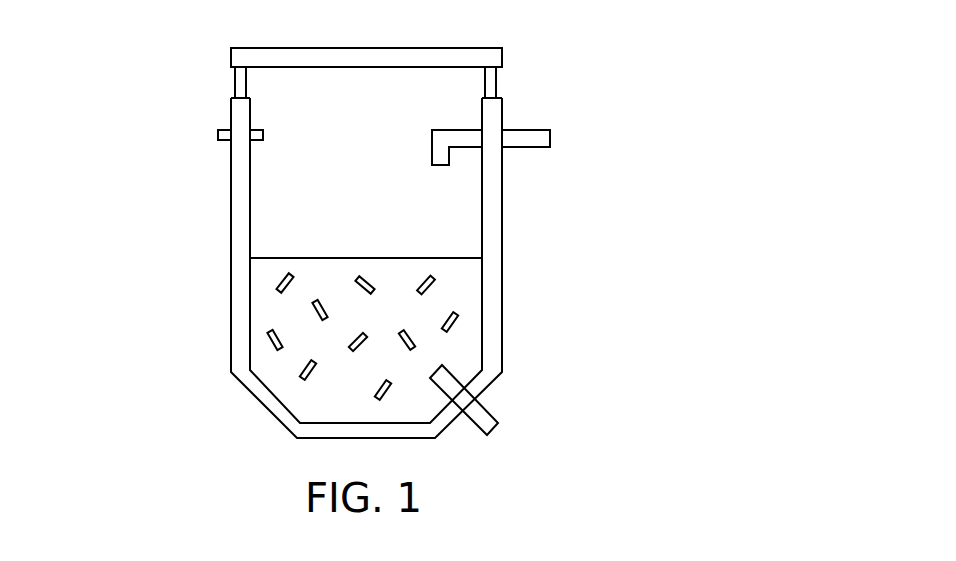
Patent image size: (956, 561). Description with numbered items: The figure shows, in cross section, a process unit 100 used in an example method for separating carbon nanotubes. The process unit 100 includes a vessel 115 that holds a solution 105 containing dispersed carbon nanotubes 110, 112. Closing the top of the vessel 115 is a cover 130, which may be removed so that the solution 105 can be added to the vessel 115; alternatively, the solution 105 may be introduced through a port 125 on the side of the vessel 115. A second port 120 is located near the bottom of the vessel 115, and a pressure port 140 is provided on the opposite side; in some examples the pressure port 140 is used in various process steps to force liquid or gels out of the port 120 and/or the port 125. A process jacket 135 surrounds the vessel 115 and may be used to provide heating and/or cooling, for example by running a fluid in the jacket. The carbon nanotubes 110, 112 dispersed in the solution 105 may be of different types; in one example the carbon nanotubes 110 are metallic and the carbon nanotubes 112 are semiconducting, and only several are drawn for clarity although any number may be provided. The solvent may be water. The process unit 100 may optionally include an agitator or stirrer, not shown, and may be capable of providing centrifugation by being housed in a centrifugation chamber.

The process unit 100 is at (158, 91).
The solution 105 is at (313, 395).
The carbon nanotubes 110 is at (433, 283).
The carbon nanotubes 112 is at (278, 292).
The vessel 115 is at (231, 181).
The port 120 is at (497, 425).
The port 125 is at (532, 130).
The cover 130 is at (502, 60).
The process jacket 135 is at (493, 262).
The pressure port 140 is at (218, 134).